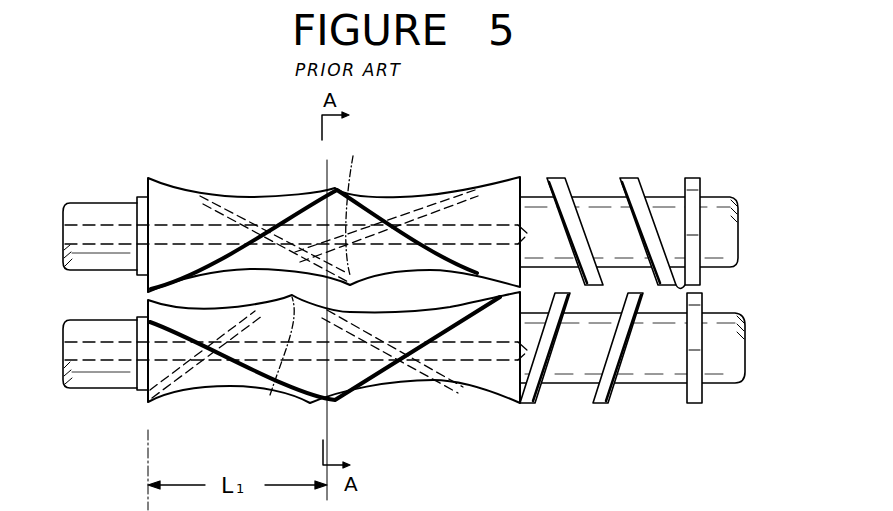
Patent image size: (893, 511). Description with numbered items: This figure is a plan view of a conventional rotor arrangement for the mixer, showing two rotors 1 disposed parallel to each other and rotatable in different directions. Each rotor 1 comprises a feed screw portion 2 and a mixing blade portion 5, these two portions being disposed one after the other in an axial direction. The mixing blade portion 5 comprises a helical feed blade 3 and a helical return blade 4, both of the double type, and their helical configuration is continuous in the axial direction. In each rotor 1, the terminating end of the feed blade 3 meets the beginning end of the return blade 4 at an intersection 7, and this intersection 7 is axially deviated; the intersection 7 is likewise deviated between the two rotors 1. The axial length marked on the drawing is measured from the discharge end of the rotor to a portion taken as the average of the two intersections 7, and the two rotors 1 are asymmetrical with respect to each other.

The rotor 1 is at (495, 172).
The feed screw portion 2 is at (633, 192).
The helical feed blade 3 is at (400, 215).
The helical return blade 4 is at (262, 223).
The mixing blade portion 5 is at (383, 208).
The intersection 7 is at (338, 190).